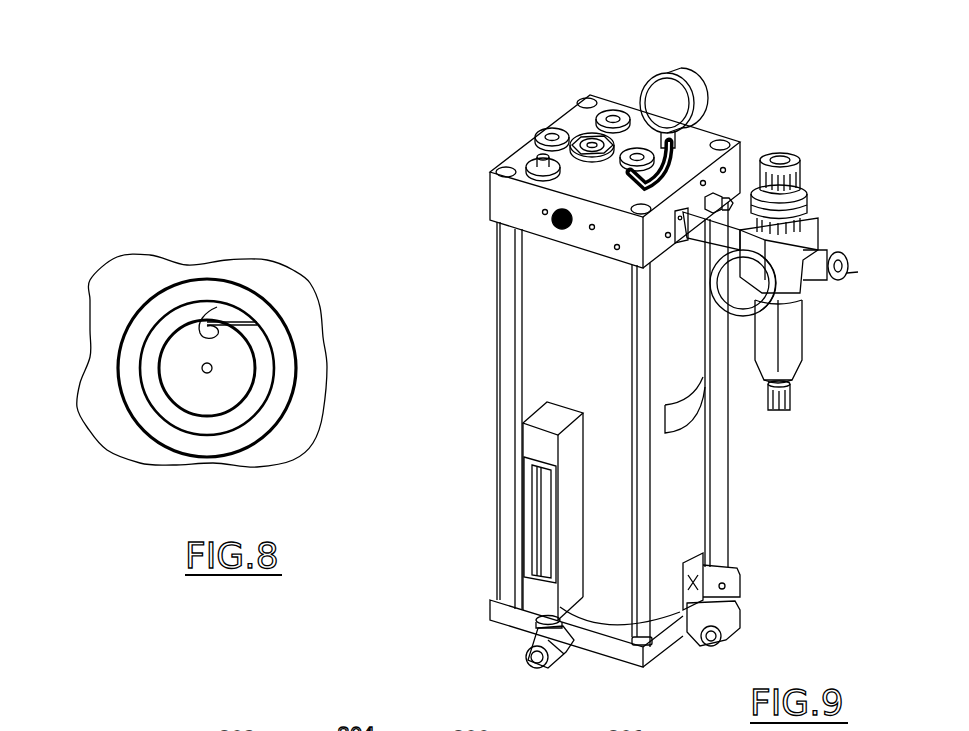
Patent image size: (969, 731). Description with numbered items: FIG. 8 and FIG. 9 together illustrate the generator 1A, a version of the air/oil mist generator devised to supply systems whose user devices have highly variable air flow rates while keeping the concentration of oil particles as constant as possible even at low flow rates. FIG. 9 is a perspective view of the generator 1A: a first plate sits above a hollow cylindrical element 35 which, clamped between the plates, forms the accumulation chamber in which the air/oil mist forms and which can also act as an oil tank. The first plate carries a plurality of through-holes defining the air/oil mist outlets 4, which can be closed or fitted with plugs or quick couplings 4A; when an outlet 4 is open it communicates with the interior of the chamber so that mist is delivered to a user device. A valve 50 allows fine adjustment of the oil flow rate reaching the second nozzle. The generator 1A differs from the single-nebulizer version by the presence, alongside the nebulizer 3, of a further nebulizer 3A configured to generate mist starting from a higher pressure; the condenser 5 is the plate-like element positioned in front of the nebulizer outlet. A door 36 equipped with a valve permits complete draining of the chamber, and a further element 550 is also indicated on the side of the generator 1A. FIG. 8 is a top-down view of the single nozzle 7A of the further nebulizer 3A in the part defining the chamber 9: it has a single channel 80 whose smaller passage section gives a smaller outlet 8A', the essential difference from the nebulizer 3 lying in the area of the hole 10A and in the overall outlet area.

In FIG. 8, the nozzle 7A is at (132, 357).
In FIG. 8, the chamber 9 is at (188, 343).
In FIG. 8, the outlet 8A' is at (245, 274).
In FIG. 8, the channel 80 is at (257, 326).
In FIG. 8, the hole 10A is at (213, 372).
In FIG. 9, the generator 1A is at (742, 113).
In FIG. 9, the nebulizer 3 is at (603, 143).
In FIG. 9, the further nebulizer 3A is at (640, 147).
In FIG. 9, the air/oil mist outlets 4 is at (605, 118).
In FIG. 9, the plugs or quick couplings 4A is at (543, 162).
In FIG. 9, the valve 50 is at (558, 233).
In FIG. 9, the mounting fitting 550 is at (737, 203).
In FIG. 9, the condenser 5 is at (825, 212).
In FIG. 9, the hollow cylindrical element 35 is at (740, 612).
In FIG. 9, the door 36 is at (525, 653).